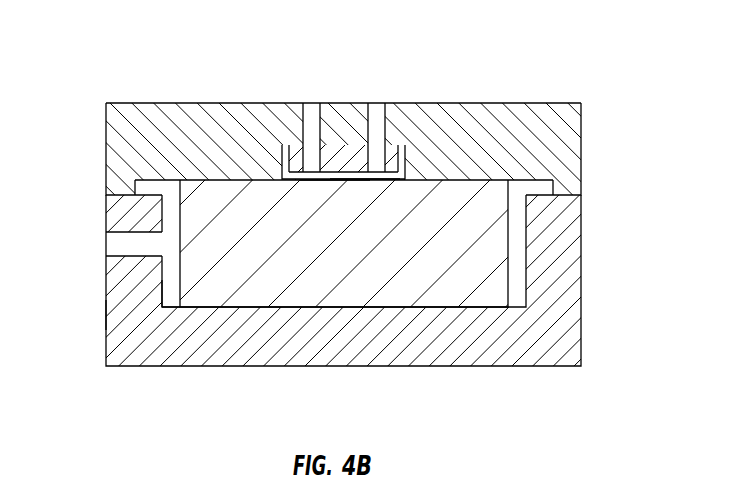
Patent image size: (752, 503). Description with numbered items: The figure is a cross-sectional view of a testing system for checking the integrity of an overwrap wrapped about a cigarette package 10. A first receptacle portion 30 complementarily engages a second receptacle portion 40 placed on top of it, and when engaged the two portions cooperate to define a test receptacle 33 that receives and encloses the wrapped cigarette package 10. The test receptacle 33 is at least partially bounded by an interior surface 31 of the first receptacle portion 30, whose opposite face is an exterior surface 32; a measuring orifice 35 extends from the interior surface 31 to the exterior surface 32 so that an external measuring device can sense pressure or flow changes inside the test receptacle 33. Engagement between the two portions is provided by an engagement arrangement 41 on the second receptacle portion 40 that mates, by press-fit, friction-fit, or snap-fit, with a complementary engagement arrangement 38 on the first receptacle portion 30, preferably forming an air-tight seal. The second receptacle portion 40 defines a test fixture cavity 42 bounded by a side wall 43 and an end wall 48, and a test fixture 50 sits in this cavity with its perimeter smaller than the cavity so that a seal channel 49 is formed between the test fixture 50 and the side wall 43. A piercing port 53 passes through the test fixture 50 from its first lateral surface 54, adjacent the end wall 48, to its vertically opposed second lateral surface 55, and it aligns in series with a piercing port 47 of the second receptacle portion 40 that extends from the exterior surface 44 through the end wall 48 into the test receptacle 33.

The cigarette package 10 is at (438, 200).
The first receptacle portion 30 is at (548, 367).
The interior surface 31 is at (163, 297).
The exterior surface 32 is at (107, 309).
The test receptacle 33 is at (166, 305).
The measuring orifice 35 is at (106, 243).
The complementary engagement arrangement 38 is at (150, 191).
The second receptacle portion 40 is at (207, 102).
The engagement arrangement 41 is at (133, 183).
The test fixture cavity 42 is at (280, 155).
The side wall 43 is at (290, 167).
The exterior surface 44 is at (552, 103).
The piercing port 47 is at (313, 102).
The end wall 48 is at (409, 147).
The seal channel 49 is at (412, 160).
The test fixture 50 is at (359, 173).
The piercing port 53 is at (303, 146).
The first lateral surface 54 is at (334, 136).
The second lateral surface 55 is at (333, 181).